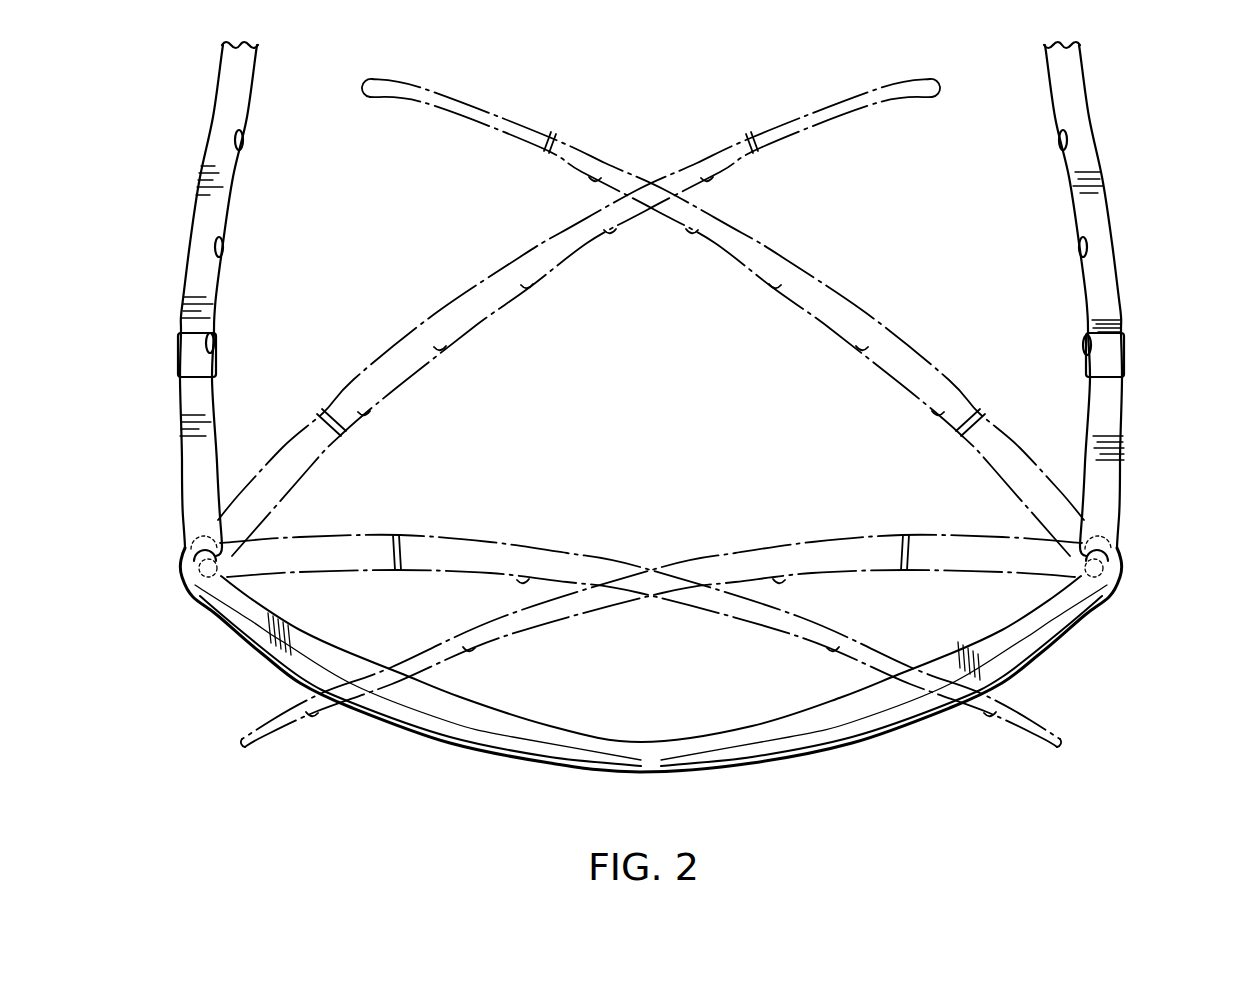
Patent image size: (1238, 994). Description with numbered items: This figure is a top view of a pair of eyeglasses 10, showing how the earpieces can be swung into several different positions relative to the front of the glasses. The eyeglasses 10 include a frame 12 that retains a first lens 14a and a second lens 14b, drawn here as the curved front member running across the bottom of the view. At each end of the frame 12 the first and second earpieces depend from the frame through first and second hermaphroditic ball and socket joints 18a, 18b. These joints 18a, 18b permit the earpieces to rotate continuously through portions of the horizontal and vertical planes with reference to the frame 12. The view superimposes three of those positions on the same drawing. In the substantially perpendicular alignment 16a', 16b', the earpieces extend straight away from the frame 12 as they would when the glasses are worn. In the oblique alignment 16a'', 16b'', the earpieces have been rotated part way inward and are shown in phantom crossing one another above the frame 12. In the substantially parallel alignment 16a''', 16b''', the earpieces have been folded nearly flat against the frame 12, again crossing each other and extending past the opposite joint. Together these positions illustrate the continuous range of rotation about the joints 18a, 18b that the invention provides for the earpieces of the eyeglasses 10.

The eyeglasses 10 is at (858, 786).
The frame 12 is at (640, 775).
The first lens 14a is at (390, 722).
The second lens 14b is at (900, 728).
The first earpiece in substantially perpendicular alignment 16a' is at (191, 299).
The second earpiece in substantially perpendicular alignment 16b' is at (1110, 299).
The first earpiece in oblique alignment 16a'' is at (579, 311).
The second earpiece in oblique alignment 16b'' is at (723, 311).
The first earpiece in substantially parallel alignment 16a''' is at (683, 641).
The second earpiece in substantially parallel alignment 16b''' is at (619, 641).
The first hermaphroditic ball and socket joint 18a is at (166, 540).
The second hermaphroditic ball and socket joint 18b is at (1132, 543).